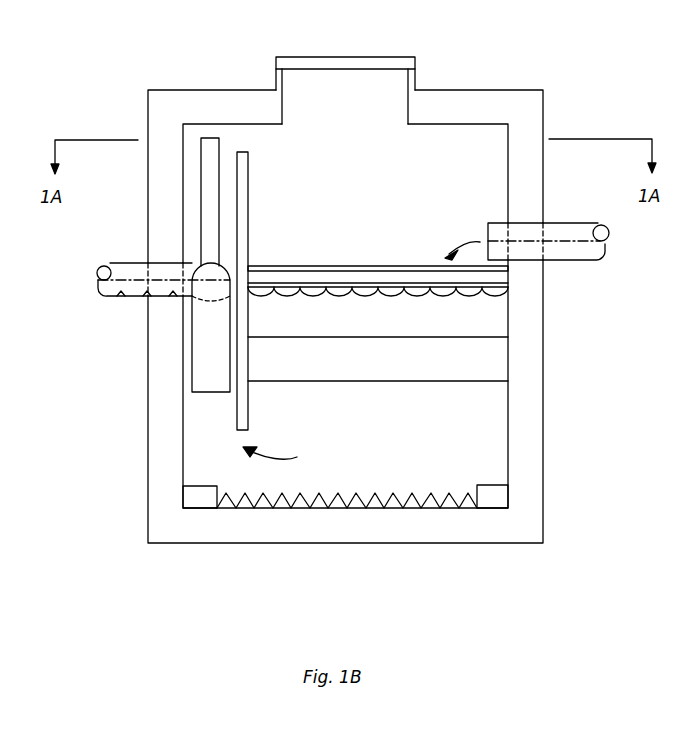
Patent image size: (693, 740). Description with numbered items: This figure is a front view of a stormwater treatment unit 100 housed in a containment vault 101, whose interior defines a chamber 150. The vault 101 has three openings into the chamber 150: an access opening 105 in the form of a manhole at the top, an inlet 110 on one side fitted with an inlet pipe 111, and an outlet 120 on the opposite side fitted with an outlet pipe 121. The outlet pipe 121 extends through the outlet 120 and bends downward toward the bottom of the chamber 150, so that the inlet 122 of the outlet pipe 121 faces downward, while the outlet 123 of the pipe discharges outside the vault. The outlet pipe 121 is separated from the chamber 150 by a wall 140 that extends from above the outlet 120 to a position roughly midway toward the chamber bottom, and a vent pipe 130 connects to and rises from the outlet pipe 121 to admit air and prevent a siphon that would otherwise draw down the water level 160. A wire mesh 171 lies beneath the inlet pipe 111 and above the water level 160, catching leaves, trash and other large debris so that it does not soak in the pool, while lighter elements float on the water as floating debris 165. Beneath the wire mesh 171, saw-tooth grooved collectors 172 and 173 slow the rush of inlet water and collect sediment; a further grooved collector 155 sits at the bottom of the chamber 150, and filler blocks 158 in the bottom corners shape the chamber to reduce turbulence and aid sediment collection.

The stormwater treatment unit 100 is at (373, 590).
The containment vault 101 is at (460, 544).
The access opening 105 is at (368, 57).
The inlet 110 is at (530, 262).
The inlet pipe 111 is at (569, 223).
The outlet 120 is at (157, 262).
The outlet pipe 121 is at (125, 297).
The inlet of outlet pipe 122 is at (211, 393).
The outlet of outlet pipe 123 is at (97, 273).
The vent pipe 130 is at (211, 137).
The wall 140 is at (249, 170).
The chamber 150 is at (376, 443).
The collector 155 is at (357, 490).
The filler blocks 158 is at (201, 486).
The water level 160 is at (449, 296).
The floating debris 165 is at (372, 296).
The wire mesh 171 is at (302, 266).
The collector 172 is at (287, 290).
The collector 173 is at (413, 383).